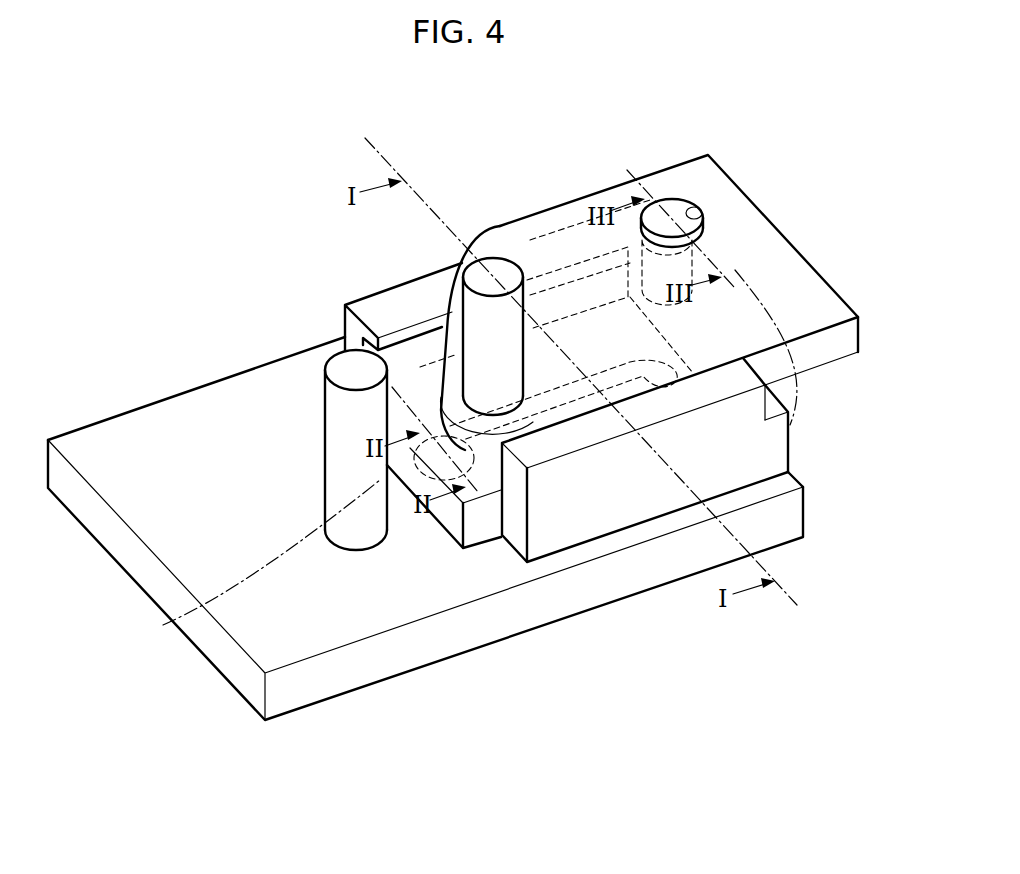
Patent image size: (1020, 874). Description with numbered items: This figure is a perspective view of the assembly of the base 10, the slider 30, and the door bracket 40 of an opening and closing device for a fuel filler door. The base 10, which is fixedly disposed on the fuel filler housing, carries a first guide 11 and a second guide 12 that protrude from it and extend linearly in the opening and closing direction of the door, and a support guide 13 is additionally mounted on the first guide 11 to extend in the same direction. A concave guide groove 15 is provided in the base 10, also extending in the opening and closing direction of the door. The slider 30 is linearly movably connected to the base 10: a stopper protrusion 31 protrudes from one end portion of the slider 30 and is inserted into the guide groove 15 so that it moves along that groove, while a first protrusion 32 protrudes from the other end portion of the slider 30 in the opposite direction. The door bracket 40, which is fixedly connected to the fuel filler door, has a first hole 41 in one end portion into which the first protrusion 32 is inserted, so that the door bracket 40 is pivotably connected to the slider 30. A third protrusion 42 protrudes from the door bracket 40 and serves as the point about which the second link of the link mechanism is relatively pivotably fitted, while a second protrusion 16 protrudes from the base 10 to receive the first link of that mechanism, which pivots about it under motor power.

The base 10 is at (118, 437).
The first guide 11 is at (593, 508).
The second guide 12 is at (368, 305).
The support guide 13 is at (767, 452).
The guide groove 15 is at (483, 467).
The second protrusion 16 is at (337, 430).
The slider 30 is at (323, 350).
The stopper protrusion 31 is at (163, 626).
The first protrusion 32 is at (680, 210).
The door bracket 40 is at (747, 227).
The first hole 41 is at (690, 208).
The third protrusion 42 is at (497, 268).